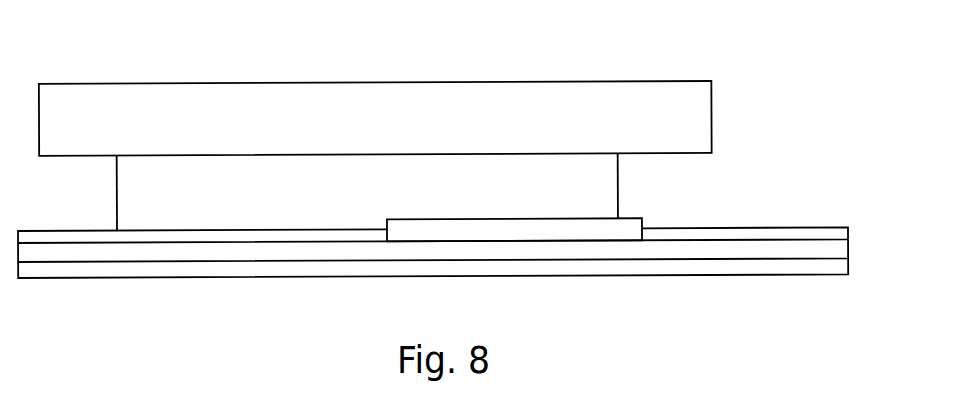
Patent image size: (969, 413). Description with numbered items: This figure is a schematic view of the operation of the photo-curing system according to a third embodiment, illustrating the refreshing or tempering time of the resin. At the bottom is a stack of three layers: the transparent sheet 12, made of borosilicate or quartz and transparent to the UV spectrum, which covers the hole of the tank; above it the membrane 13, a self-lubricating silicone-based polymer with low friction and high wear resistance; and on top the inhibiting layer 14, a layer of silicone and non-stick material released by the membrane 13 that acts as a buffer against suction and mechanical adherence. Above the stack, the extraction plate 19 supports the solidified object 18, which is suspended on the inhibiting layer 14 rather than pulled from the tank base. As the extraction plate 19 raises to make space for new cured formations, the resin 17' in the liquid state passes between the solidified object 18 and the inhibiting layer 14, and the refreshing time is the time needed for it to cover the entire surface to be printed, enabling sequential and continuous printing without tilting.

The sheet 12 is at (840, 272).
The membrane 13 is at (840, 254).
The inhibiting layer 14 is at (842, 240).
The resin in the liquid state 17' is at (546, 210).
The object 18 is at (397, 202).
The extraction plate 19 is at (397, 132).